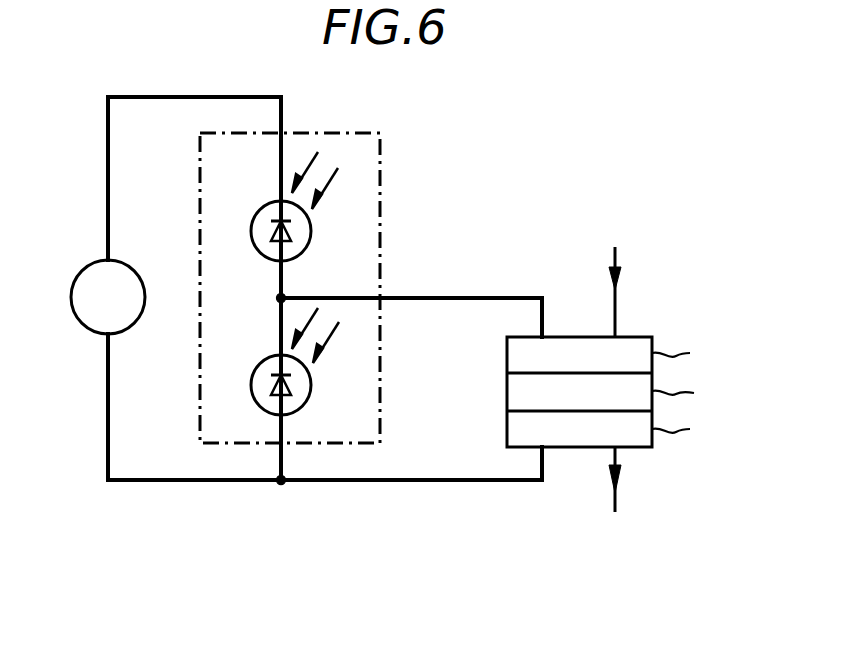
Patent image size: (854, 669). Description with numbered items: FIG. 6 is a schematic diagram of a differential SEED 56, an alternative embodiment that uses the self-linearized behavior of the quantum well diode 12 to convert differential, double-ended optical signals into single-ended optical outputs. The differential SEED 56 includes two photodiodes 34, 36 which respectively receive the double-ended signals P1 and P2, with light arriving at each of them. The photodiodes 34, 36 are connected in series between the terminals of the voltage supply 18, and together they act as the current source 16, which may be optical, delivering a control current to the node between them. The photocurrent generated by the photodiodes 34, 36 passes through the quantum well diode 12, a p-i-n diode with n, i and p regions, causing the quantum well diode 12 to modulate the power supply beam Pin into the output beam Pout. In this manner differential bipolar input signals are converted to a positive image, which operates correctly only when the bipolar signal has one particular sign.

The differential SEED 56 is at (416, 91).
The quantum well diode 12 is at (666, 298).
The current source 16 is at (381, 195).
The voltage supply 18 is at (92, 318).
The photodiode 34 is at (259, 216).
The photodiode 36 is at (259, 370).